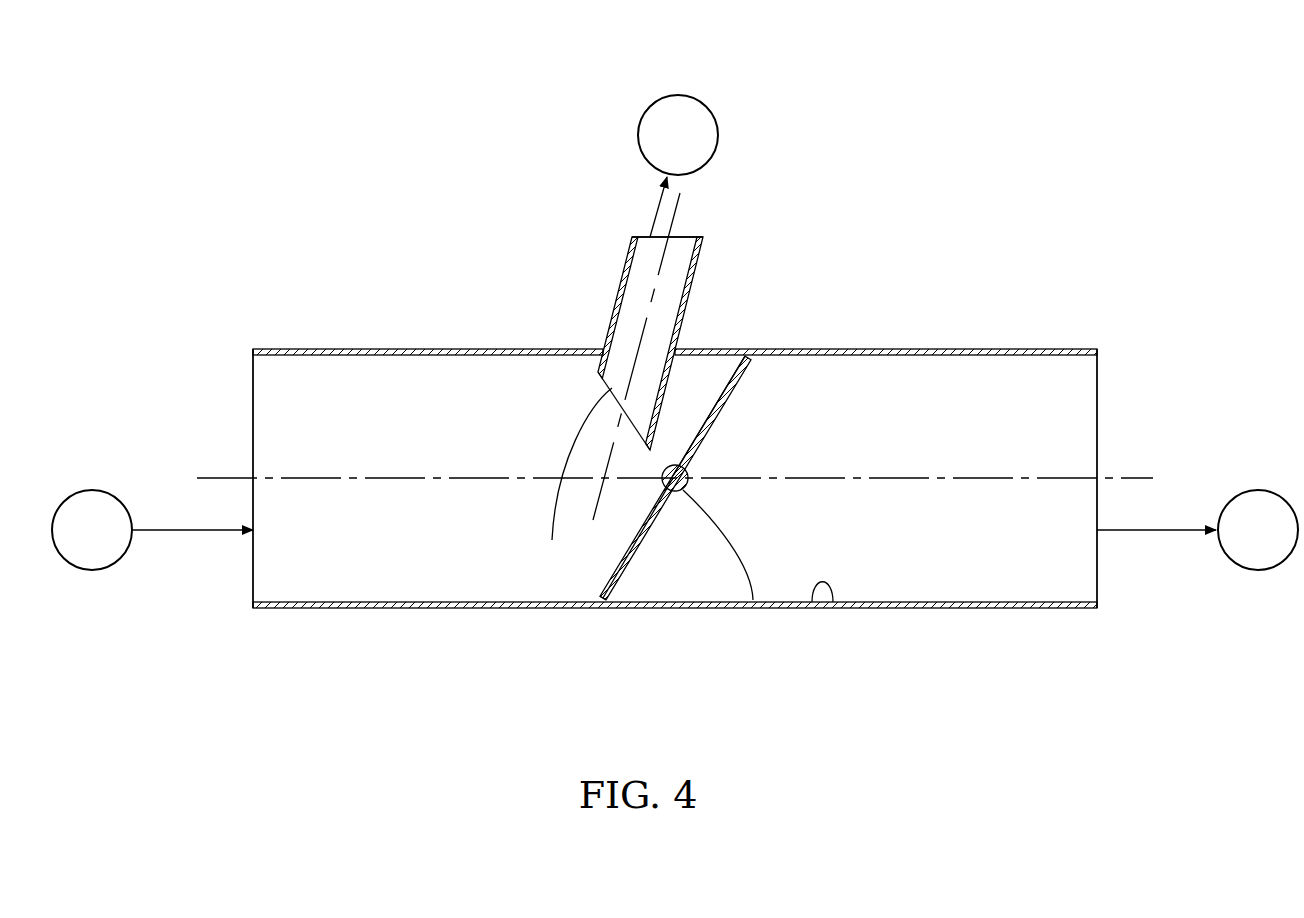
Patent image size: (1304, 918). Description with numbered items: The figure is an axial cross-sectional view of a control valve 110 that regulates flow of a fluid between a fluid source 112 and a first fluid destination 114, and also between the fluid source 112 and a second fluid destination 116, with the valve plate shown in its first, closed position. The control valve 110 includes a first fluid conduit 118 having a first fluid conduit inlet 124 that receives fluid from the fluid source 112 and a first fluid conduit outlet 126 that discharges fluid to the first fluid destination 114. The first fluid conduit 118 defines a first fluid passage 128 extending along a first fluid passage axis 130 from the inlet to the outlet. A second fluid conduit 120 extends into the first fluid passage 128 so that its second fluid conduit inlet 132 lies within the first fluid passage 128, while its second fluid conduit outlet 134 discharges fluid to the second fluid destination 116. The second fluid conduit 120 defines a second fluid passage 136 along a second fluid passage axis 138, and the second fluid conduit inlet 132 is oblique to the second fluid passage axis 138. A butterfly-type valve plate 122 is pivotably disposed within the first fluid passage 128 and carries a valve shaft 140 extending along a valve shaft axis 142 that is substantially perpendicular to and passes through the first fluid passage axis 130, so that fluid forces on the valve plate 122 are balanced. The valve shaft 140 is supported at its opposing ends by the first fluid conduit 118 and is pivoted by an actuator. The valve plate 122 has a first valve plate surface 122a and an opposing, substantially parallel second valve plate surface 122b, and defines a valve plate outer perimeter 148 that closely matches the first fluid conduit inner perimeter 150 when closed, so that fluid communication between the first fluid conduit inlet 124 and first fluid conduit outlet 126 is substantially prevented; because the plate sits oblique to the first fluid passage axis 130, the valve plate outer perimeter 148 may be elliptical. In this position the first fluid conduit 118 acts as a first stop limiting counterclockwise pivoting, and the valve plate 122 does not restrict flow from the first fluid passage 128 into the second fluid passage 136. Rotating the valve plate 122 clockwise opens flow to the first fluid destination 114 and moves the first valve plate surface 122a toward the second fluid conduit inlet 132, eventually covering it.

The control valve 110 is at (217, 117).
The fluid source 112 is at (152, 530).
The first fluid destination 114 is at (1197, 530).
The second fluid destination 116 is at (678, 166).
The first fluid conduit 118 is at (472, 608).
The second fluid conduit 120 is at (610, 328).
The valve plate 122 is at (625, 531).
The first valve plate surface 122a is at (625, 531).
The second valve plate surface 122b is at (658, 518).
The first fluid conduit inlet 124 is at (253, 418).
The first fluid conduit outlet 126 is at (1097, 422).
The first fluid passage 128 is at (418, 558).
The first fluid passage axis 130 is at (1133, 478).
The second fluid conduit inlet 132 is at (552, 540).
The second fluid conduit outlet 134 is at (686, 237).
The second fluid passage 136 is at (643, 283).
The second fluid passage axis 138 is at (681, 203).
The valve shaft 140 is at (753, 600).
The valve shaft axis 142 is at (684, 473).
The valve plate outer perimeter 148 is at (605, 603).
The first fluid conduit inner perimeter 150 is at (833, 605).